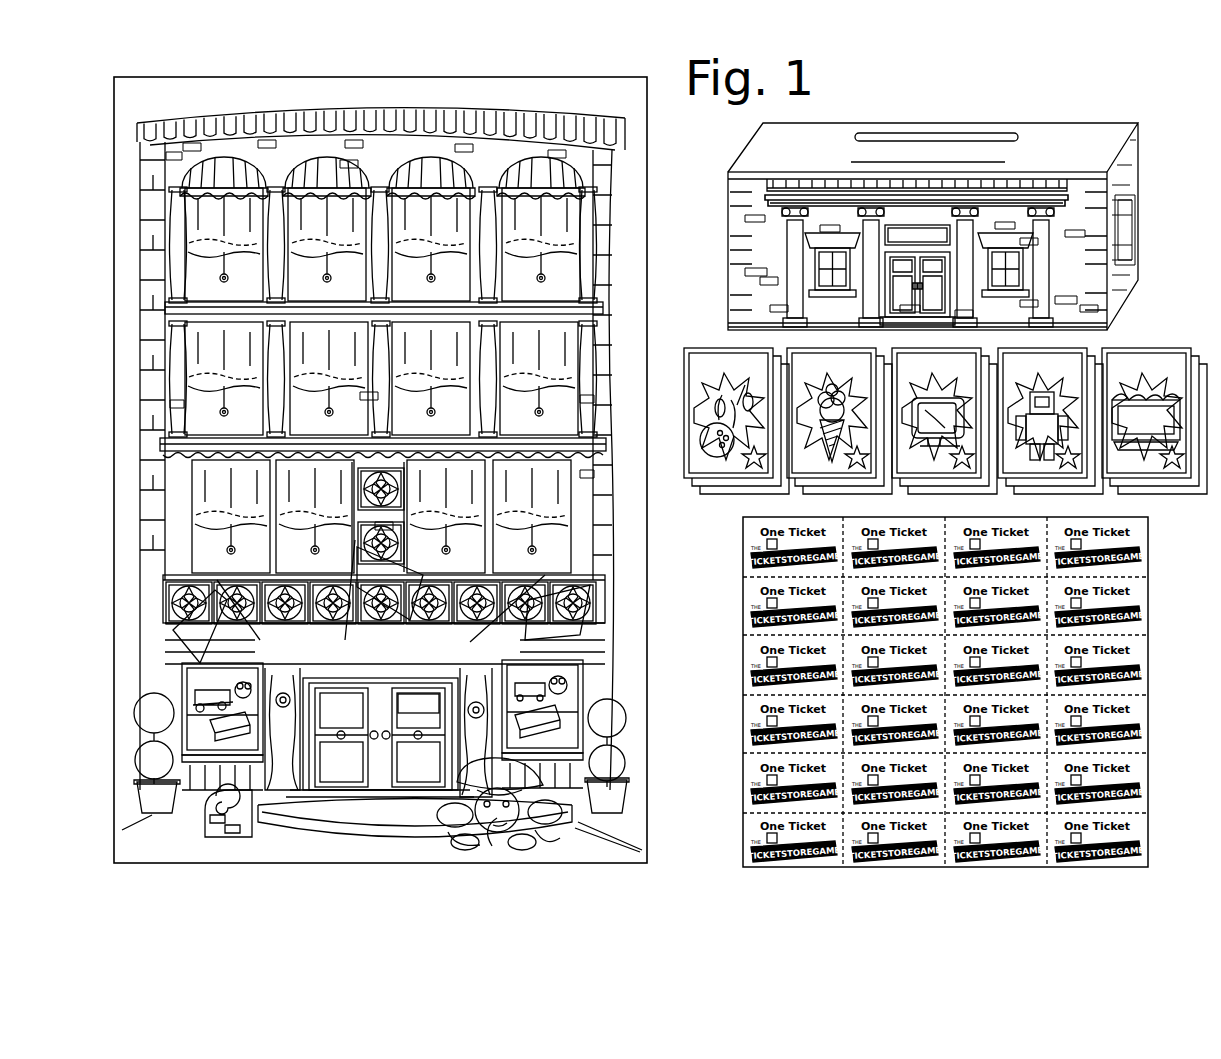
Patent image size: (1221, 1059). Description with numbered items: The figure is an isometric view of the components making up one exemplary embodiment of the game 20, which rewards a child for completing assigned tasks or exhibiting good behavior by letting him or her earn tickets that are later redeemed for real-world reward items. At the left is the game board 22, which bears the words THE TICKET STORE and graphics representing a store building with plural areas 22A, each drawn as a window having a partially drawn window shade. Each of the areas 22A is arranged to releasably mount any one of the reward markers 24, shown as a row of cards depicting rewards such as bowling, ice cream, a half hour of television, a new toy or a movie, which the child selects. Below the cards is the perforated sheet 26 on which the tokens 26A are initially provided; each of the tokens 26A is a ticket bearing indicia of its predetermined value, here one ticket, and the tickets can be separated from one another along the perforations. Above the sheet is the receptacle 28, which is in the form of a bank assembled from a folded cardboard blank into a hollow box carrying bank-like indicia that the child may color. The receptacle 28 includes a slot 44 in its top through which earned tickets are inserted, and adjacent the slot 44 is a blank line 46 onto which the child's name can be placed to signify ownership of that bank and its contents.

The game 20 is at (933, 187).
The game board 22 is at (623, 220).
The areas 22A is at (322, 545).
The reward markers 24 is at (725, 498).
The perforated sheet 26 is at (944, 692).
The tokens 26A is at (1132, 840).
The receptacle 28 is at (933, 192).
The slot 44 is at (915, 137).
The blank line 46 is at (975, 158).